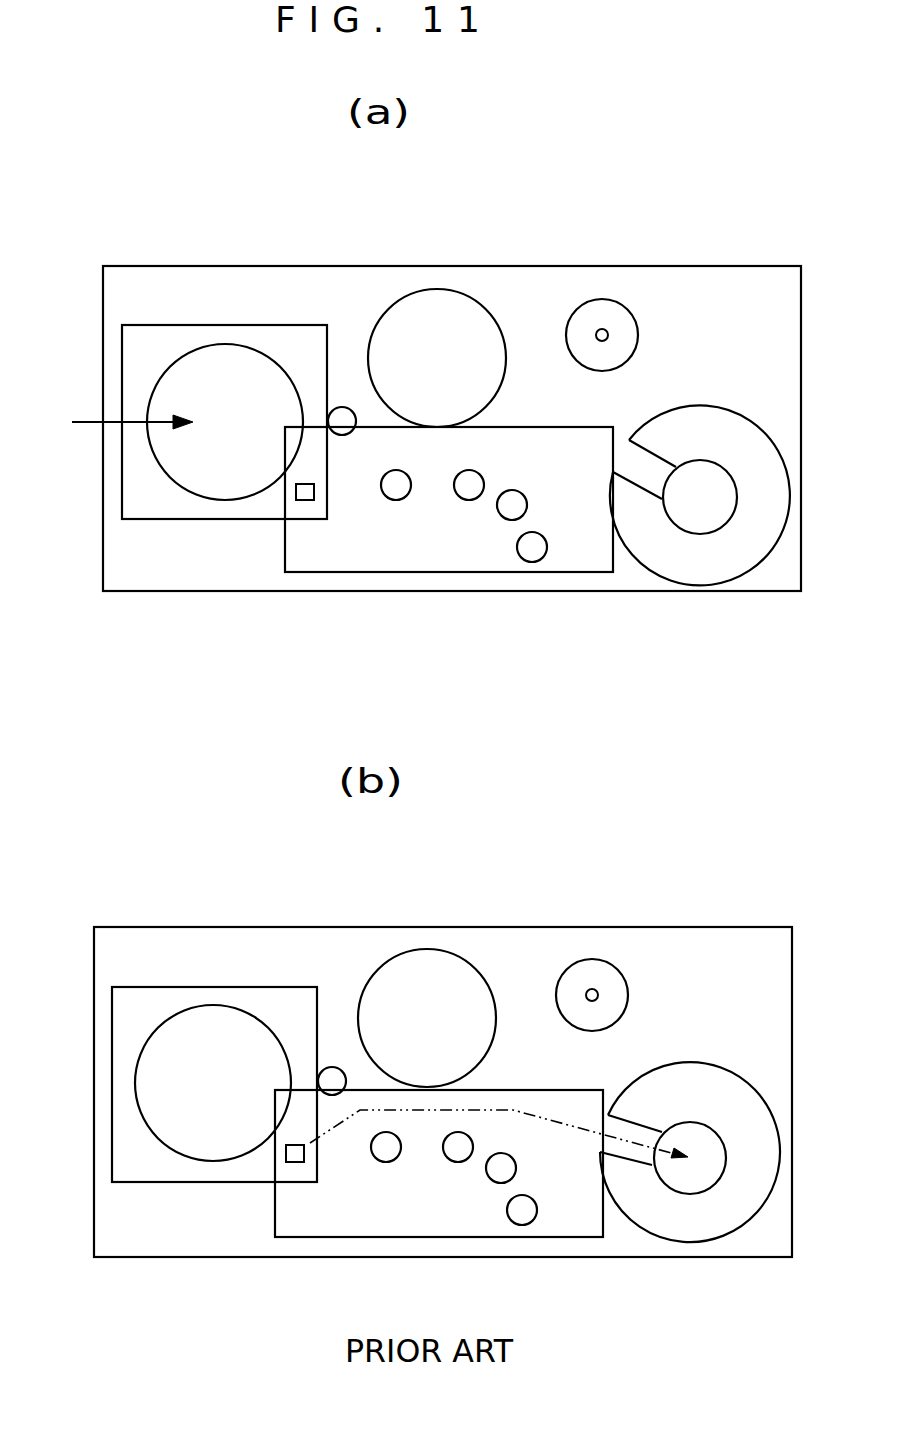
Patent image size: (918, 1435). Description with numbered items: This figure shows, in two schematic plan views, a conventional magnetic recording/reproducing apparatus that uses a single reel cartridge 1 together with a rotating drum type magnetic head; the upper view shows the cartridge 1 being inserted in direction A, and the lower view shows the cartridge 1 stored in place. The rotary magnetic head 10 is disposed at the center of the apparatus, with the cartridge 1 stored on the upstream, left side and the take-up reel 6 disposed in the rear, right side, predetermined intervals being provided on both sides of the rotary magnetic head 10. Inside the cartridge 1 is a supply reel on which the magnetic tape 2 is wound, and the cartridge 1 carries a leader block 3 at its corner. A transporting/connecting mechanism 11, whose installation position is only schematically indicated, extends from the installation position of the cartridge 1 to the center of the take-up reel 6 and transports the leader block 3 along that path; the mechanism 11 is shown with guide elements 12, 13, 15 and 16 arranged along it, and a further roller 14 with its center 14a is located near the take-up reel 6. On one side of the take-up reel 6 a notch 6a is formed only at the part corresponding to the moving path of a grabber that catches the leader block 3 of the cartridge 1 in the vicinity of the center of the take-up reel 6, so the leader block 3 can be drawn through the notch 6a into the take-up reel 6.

The single reel cartridge 1 is at (226, 325).
The magnetic tape 2 is at (266, 500).
The leader block 3 is at (307, 500).
The take-up reel 6 is at (747, 417).
The notch 6a is at (648, 472).
The rotary magnetic head 10 is at (437, 290).
The transporting/connecting mechanism 11 is at (460, 574).
The conveyance roller 12 is at (397, 500).
The conveyance roller 13 is at (480, 474).
The toner supply roller 14 is at (637, 318).
The roller shaft 14a is at (603, 329).
The conveyance roller 15 is at (523, 494).
The conveyance roller 16 is at (542, 536).
The insertion direction A is at (120, 406).